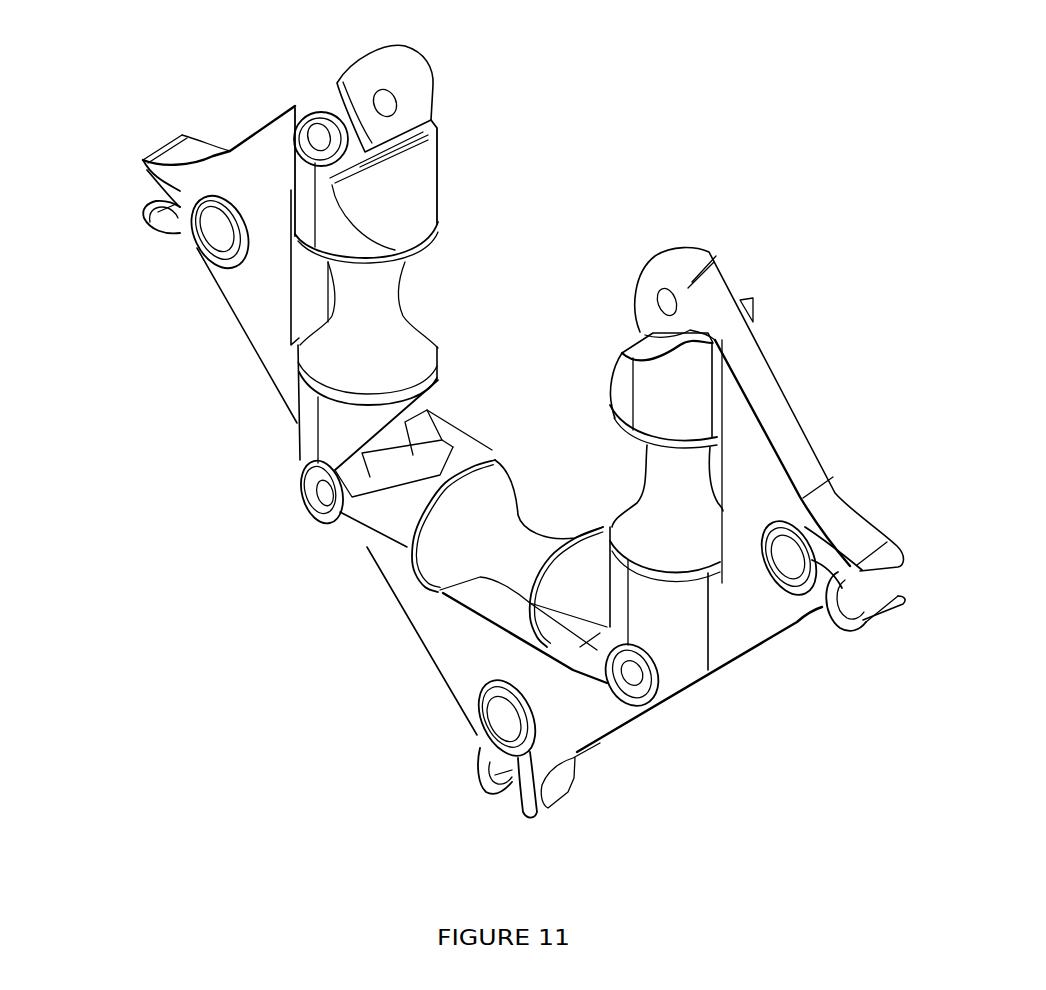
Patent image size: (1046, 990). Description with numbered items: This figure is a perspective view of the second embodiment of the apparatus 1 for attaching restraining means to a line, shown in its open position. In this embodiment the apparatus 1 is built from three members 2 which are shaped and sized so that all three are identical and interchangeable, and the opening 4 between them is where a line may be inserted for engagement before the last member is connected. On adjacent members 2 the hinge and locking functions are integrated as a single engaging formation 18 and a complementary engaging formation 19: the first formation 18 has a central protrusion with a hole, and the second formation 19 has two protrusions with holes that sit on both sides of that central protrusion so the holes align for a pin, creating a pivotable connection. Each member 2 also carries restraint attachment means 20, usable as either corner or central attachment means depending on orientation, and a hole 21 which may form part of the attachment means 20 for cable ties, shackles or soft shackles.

The apparatus for attaching restraining means to a line 1 is at (832, 98).
The members 2 is at (272, 313).
The opening 4 is at (541, 262).
The engaging formation 18 is at (690, 268).
The complementary engaging formation 19 is at (400, 63).
The restraint attachment means 20 is at (150, 163).
The hole 21 is at (210, 240).